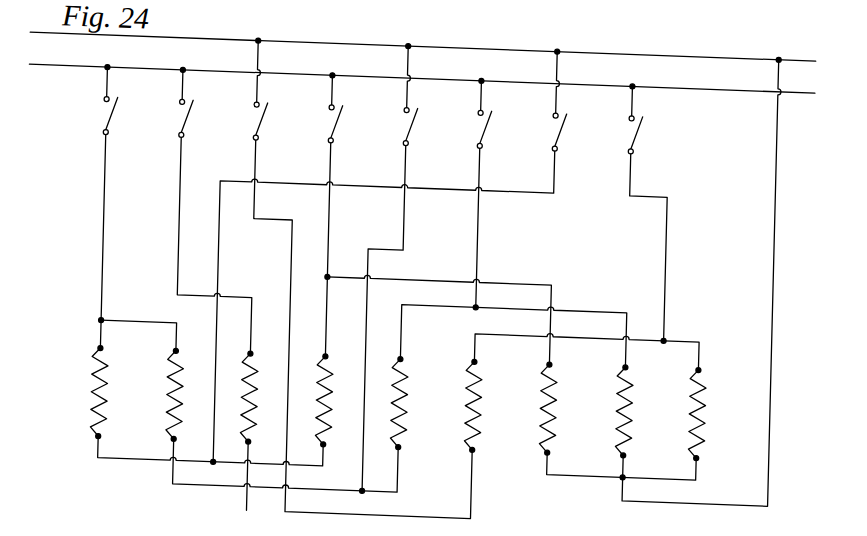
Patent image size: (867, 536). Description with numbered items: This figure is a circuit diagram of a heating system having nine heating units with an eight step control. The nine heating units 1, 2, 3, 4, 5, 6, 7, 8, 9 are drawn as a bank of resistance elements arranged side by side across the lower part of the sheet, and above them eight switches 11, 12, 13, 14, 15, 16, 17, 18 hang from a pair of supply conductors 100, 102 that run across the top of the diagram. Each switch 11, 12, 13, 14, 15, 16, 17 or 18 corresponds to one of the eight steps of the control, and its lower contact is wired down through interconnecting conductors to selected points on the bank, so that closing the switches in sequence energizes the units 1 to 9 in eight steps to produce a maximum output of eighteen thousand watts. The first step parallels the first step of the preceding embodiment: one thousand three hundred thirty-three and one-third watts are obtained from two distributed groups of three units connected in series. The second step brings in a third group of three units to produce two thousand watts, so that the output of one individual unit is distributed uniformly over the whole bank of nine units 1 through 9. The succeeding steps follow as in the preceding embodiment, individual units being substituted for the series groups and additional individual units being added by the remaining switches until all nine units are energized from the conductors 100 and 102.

The heating unit 1 is at (101, 389).
The heating unit 2 is at (176, 388).
The heating unit 3 is at (251, 405).
The heating unit 4 is at (326, 405).
The heating unit 5 is at (401, 405).
The heating unit 6 is at (475, 388).
The heating unit 7 is at (550, 388).
The heating unit 8 is at (626, 388).
The heating unit 9 is at (699, 388).
The step control switch 11 is at (114, 110).
The step control switch 12 is at (190, 110).
The step control switch 13 is at (264, 110).
The step control switch 14 is at (340, 110).
The step control switch 15 is at (414, 110).
The step control switch 16 is at (488, 110).
The step control switch 17 is at (564, 110).
The step control switch 18 is at (640, 110).
The supply conductor 100 is at (321, 6).
The supply conductor 102 is at (355, 47).